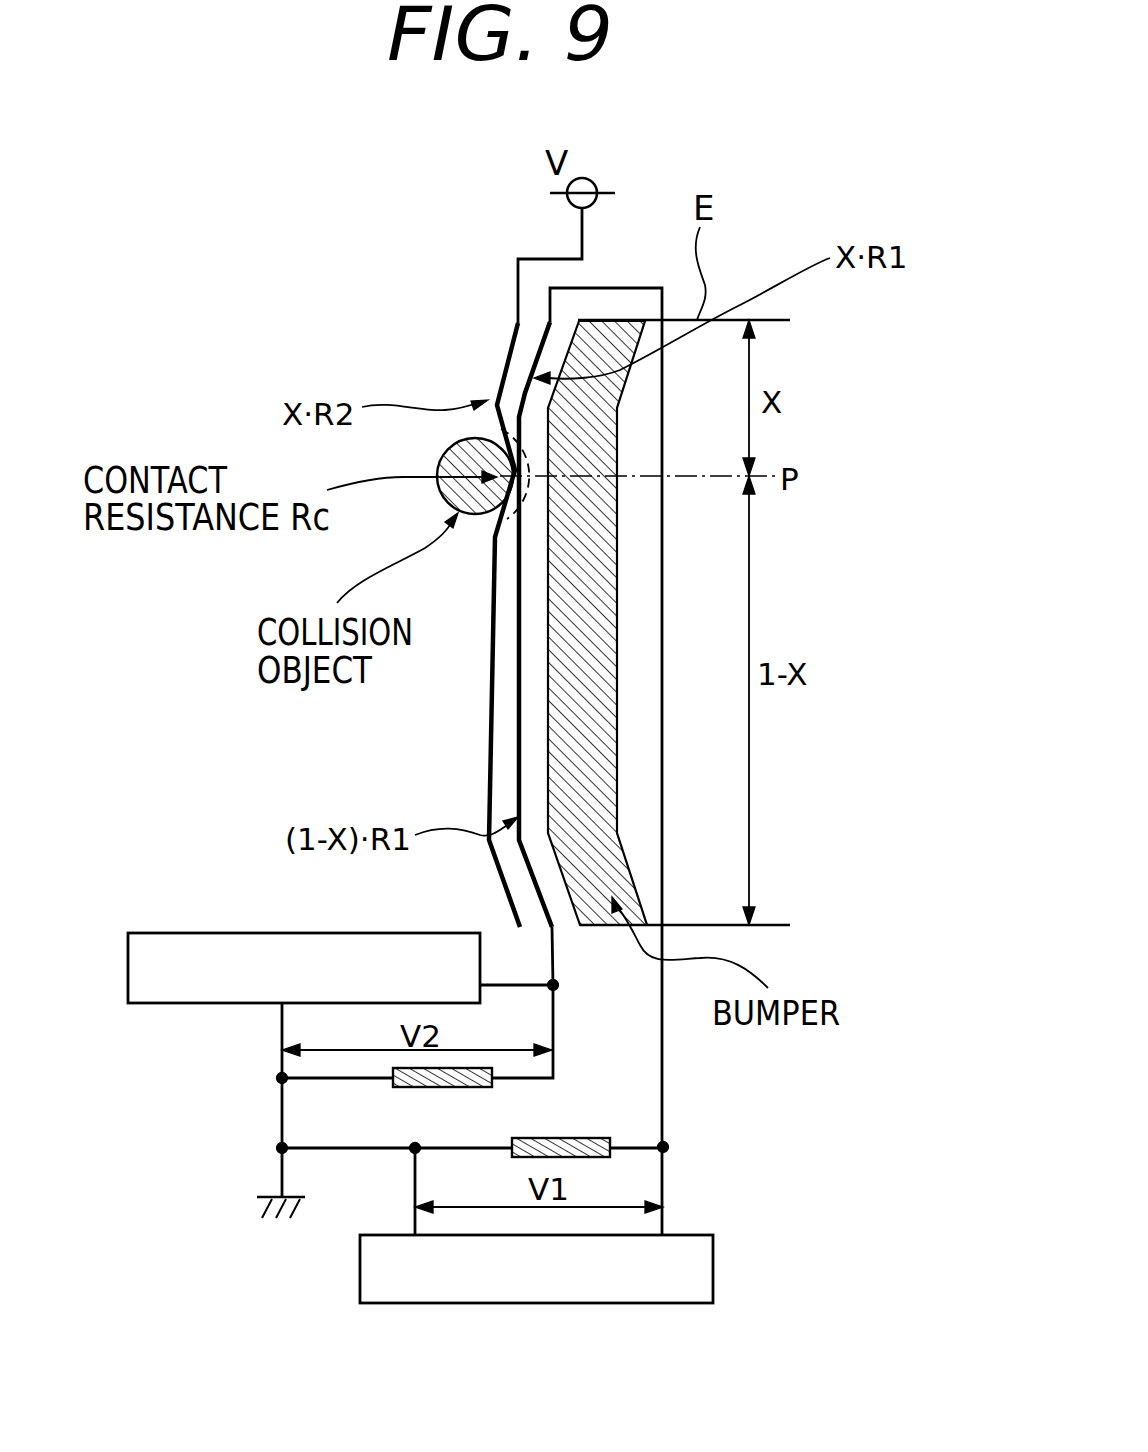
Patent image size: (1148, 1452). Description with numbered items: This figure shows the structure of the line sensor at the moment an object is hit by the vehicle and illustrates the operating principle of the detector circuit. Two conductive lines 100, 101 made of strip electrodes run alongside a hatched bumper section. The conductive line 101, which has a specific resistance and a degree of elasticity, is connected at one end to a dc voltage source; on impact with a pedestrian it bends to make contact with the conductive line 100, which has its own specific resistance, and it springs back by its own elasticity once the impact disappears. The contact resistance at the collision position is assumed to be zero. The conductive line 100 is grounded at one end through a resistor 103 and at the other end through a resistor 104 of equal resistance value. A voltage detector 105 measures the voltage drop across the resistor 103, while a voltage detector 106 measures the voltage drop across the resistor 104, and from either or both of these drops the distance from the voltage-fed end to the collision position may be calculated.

The conductive line 100 is at (523, 392).
The conductive line 101 is at (511, 358).
The resistor 103 is at (595, 1137).
The resistor 104 is at (413, 1088).
The voltage detector 105 is at (713, 1263).
The voltage detector 106 is at (183, 933).